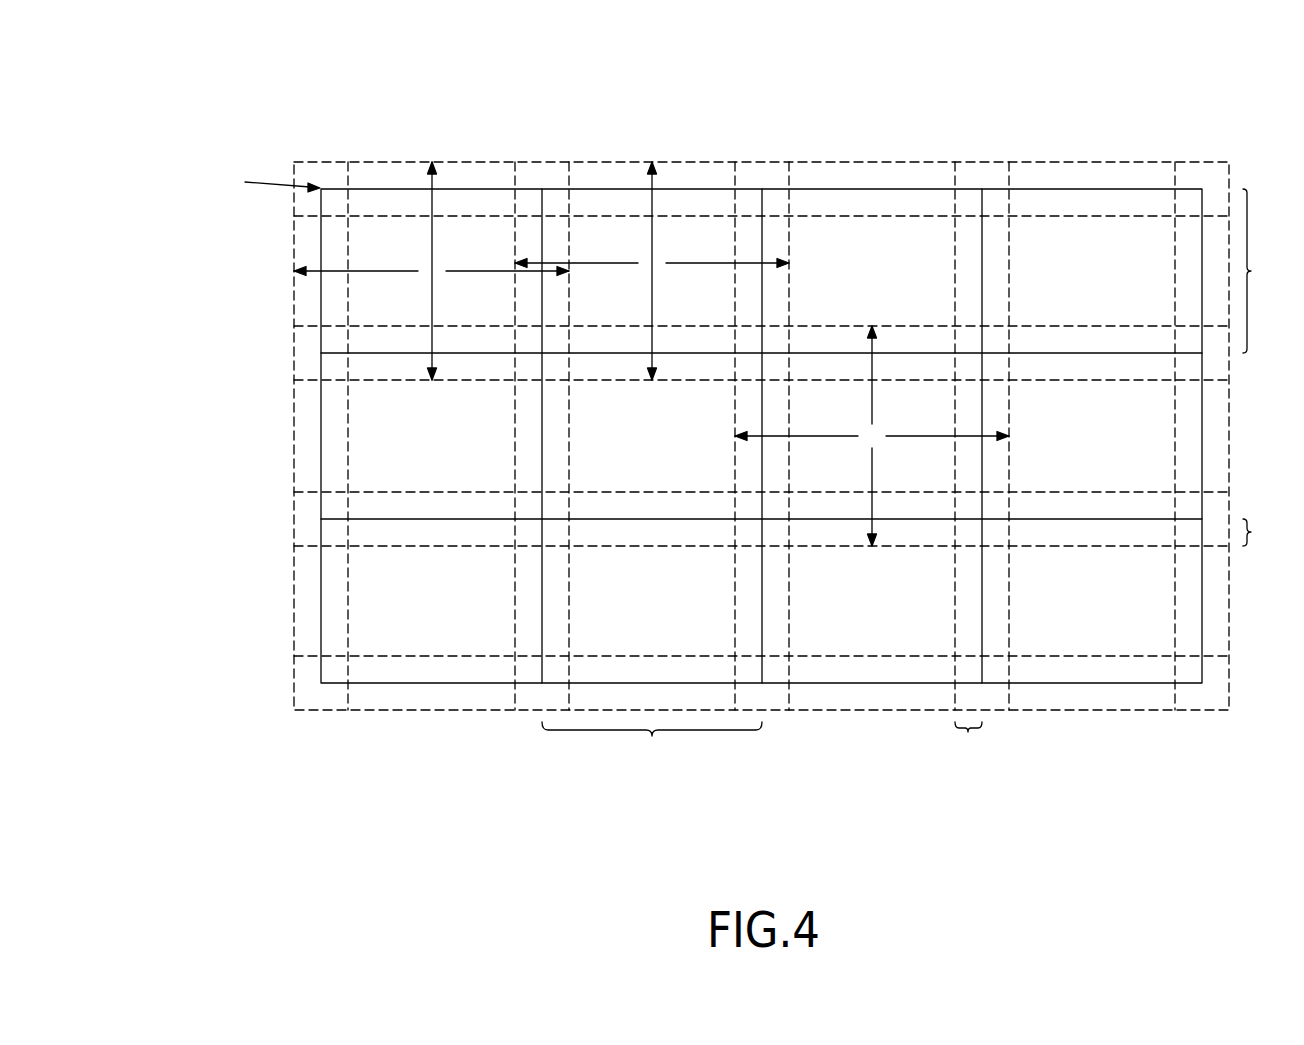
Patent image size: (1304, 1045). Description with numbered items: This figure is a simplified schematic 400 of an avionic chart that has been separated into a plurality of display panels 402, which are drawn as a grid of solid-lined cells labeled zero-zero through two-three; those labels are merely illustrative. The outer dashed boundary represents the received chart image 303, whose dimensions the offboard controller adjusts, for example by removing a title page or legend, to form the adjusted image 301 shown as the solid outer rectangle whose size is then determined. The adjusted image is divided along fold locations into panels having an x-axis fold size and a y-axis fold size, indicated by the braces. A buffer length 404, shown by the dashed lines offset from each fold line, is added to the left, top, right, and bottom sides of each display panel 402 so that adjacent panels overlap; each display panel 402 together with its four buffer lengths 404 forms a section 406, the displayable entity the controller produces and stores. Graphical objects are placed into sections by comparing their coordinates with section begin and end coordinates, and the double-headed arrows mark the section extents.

The tiling scheme 400 is at (266, 74).
The display panel 402 is at (388, 238).
The buffer length 404 is at (555, 232).
The section 406 is at (475, 187).
The adjusted image 301 is at (322, 583).
The received chart image 303 is at (293, 647).